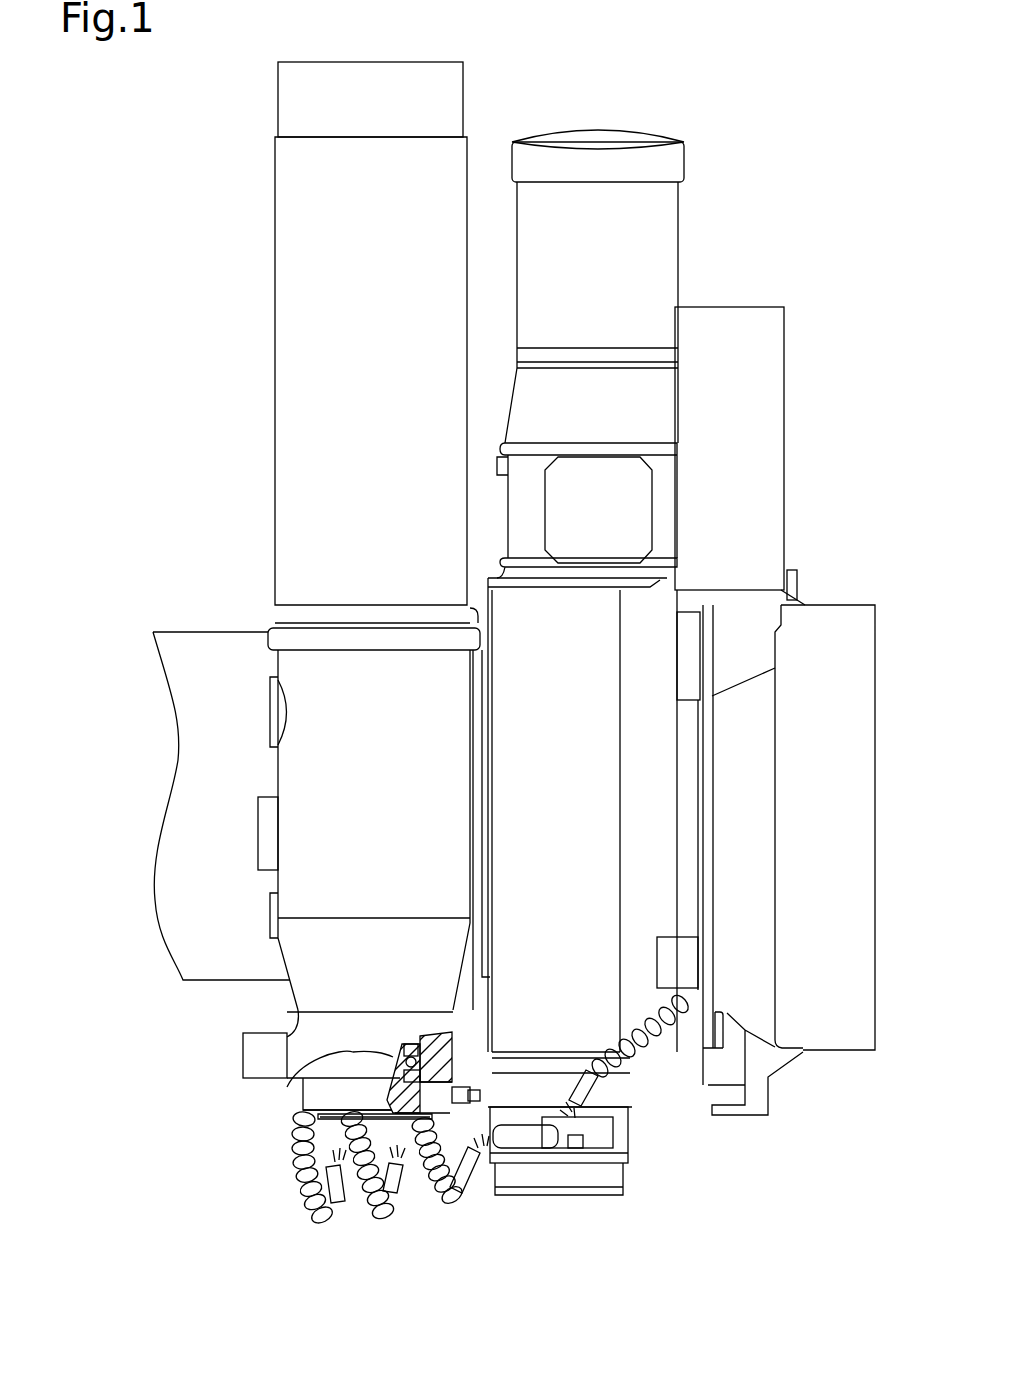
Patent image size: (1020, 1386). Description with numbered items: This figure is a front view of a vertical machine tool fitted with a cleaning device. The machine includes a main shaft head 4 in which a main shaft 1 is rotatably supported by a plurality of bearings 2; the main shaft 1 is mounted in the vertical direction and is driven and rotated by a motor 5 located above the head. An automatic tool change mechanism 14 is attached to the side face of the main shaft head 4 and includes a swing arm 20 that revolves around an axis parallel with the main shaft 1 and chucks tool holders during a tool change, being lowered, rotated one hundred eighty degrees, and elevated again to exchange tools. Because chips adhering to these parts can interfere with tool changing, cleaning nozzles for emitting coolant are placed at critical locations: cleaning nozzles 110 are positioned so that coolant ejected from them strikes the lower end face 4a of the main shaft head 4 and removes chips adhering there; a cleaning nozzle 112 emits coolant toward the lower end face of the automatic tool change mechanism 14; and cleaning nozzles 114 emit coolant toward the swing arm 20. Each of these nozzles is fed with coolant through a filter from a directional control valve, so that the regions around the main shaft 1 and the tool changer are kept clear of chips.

The main shaft 1 is at (395, 1120).
The bearings 2 is at (287, 1087).
The main shaft head 4 is at (343, 897).
The lower end face 4a is at (288, 1112).
The motor 5 is at (297, 262).
The automatic tool change mechanism 14 is at (822, 658).
The swing arm 20 is at (537, 1137).
The cleaning nozzles 110 is at (393, 1189).
The cleaning nozzle 112 is at (468, 1177).
The cleaning nozzles 114 is at (627, 1100).